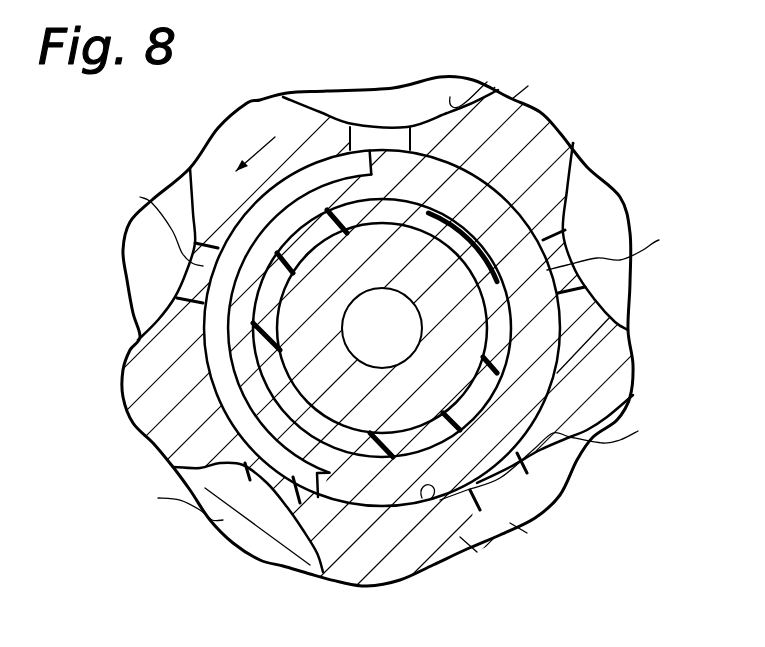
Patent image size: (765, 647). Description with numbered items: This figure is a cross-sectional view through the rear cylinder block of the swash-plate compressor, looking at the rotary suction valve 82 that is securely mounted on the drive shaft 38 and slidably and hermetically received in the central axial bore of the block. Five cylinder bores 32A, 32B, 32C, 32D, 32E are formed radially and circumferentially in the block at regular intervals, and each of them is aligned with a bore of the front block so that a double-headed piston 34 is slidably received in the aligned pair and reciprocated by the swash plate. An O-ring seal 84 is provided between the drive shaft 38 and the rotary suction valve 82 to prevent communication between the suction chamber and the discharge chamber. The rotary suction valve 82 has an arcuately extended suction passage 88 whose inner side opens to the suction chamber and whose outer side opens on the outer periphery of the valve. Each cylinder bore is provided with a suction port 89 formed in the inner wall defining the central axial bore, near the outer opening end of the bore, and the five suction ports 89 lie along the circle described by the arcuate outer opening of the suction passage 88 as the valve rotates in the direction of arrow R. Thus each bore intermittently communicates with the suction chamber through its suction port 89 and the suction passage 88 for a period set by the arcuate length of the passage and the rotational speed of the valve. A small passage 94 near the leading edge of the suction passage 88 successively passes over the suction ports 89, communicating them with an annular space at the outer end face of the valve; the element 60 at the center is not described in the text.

The cylinder bore 32A is at (458, 96).
The cylinder bore 32B is at (143, 333).
The cylinder bore 32C is at (290, 548).
The cylinder bore 32D is at (560, 493).
The cylinder bore 32E is at (573, 180).
The double-headed piston 34 is at (527, 533).
The drive shaft 38 is at (443, 257).
The shaft 60 is at (400, 344).
The rotary suction valve 82 is at (315, 487).
The O-ring seal 84 is at (520, 393).
The suction passage 88 is at (245, 377).
The suction port 89 is at (140, 197).
The small passage 94 is at (422, 498).
The arrow indicating rotational direction R is at (255, 152).